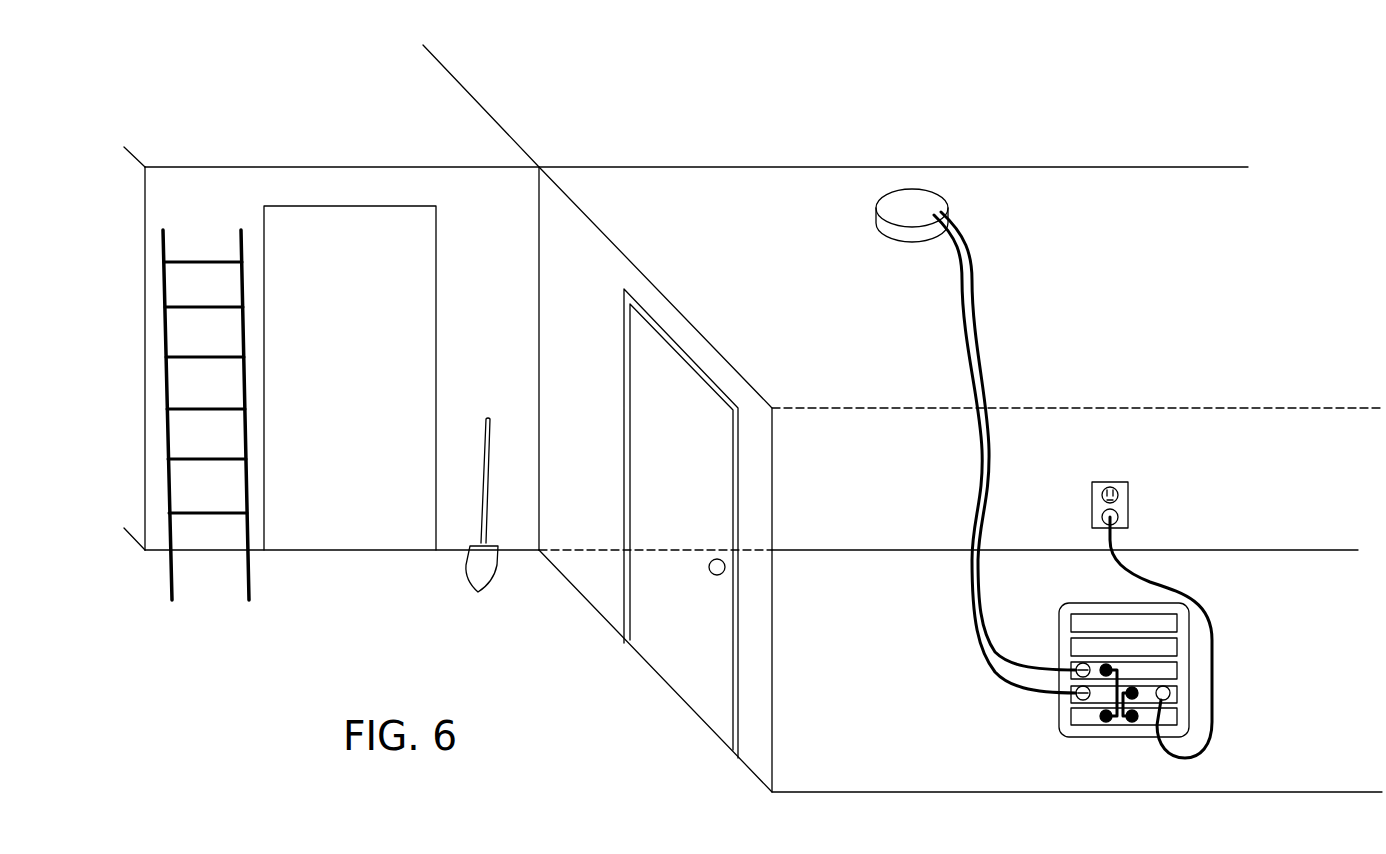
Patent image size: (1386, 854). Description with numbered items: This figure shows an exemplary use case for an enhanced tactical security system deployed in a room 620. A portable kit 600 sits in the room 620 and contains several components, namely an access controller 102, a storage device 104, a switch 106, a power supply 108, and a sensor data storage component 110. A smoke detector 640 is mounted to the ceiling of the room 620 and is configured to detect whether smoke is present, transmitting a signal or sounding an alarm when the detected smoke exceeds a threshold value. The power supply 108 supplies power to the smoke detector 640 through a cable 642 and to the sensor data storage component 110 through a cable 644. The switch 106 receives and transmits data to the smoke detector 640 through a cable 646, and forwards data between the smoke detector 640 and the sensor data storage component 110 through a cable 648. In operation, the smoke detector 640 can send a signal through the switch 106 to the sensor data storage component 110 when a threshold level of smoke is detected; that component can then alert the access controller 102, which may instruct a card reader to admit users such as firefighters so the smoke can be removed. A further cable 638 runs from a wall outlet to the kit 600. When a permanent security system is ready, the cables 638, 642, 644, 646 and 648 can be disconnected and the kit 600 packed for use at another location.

The access controller 102 is at (1177, 623).
The storage device 104 is at (1177, 647).
The switch 106 is at (1177, 671).
The power supply 108 is at (1177, 694).
The sensor data storage component 110 is at (1177, 716).
The kit 600 is at (1192, 670).
The room 620 is at (1238, 269).
The cable 638 is at (1148, 583).
The smoke detector 640 is at (942, 203).
The cable 642 is at (980, 658).
The cable 644 is at (1119, 718).
The cable 646 is at (978, 597).
The cable 648 is at (1118, 667).